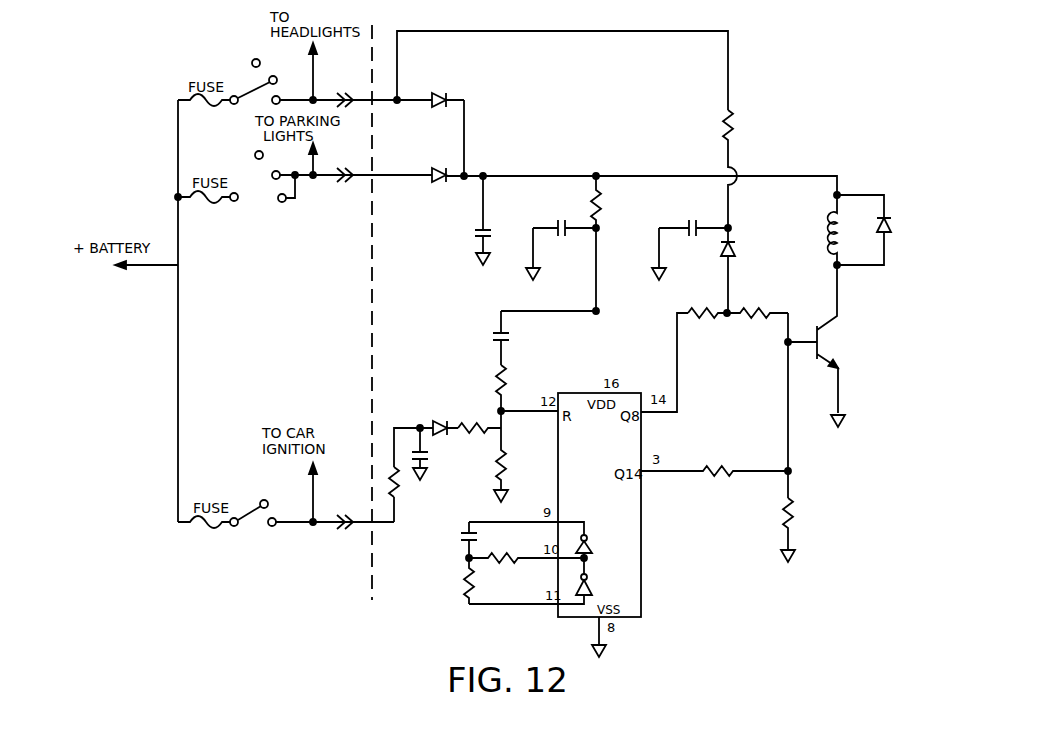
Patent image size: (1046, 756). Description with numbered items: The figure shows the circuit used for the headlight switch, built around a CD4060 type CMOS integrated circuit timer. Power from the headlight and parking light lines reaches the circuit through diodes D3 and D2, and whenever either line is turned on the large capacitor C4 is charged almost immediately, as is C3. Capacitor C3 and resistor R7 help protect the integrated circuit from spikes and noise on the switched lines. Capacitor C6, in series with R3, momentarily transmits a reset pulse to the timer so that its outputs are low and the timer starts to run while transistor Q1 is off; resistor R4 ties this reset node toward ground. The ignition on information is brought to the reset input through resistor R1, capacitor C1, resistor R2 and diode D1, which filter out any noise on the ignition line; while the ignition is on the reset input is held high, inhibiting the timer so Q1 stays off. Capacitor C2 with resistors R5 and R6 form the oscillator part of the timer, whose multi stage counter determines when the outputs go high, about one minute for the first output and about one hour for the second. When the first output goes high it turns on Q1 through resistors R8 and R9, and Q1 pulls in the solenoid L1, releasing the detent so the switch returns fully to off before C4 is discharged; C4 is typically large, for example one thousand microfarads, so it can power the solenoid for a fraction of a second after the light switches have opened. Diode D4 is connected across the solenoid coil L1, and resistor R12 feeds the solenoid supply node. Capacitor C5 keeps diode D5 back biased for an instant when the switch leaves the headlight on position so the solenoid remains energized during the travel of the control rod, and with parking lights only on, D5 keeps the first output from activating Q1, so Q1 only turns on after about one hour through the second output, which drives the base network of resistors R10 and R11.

The diode D1 is at (439, 417).
The diode D2 is at (432, 188).
The diode D3 is at (430, 88).
The diode D4 is at (878, 230).
The diode D5 is at (743, 271).
The capacitor C1 is at (431, 454).
The capacitor C2 is at (456, 540).
The capacitor C3 is at (561, 243).
The capacitor C4 is at (494, 220).
The capacitor C5 is at (691, 242).
The capacitor C6 is at (514, 338).
The resistor R1 is at (405, 487).
The resistor R2 is at (479, 438).
The resistor R3 is at (514, 388).
The resistor R4 is at (513, 456).
The resistor R5 is at (526, 549).
The resistor R6 is at (455, 581).
The resistor R7 is at (608, 243).
The resistor R8 is at (707, 304).
The resistor R9 is at (757, 304).
The resistor R10 is at (714, 461).
The resistor R11 is at (807, 530).
The resistor R12 is at (749, 169).
The transistor Q1 is at (820, 346).
The solenoid L1 is at (840, 232).